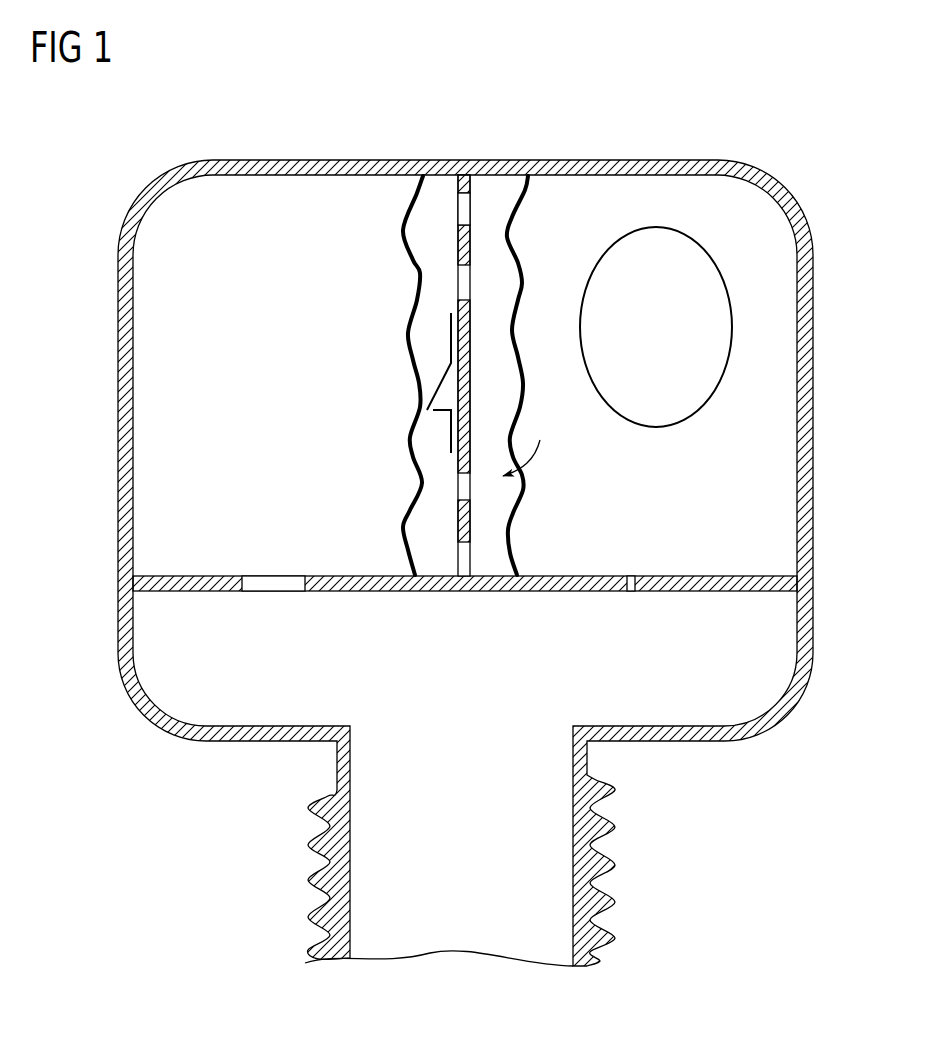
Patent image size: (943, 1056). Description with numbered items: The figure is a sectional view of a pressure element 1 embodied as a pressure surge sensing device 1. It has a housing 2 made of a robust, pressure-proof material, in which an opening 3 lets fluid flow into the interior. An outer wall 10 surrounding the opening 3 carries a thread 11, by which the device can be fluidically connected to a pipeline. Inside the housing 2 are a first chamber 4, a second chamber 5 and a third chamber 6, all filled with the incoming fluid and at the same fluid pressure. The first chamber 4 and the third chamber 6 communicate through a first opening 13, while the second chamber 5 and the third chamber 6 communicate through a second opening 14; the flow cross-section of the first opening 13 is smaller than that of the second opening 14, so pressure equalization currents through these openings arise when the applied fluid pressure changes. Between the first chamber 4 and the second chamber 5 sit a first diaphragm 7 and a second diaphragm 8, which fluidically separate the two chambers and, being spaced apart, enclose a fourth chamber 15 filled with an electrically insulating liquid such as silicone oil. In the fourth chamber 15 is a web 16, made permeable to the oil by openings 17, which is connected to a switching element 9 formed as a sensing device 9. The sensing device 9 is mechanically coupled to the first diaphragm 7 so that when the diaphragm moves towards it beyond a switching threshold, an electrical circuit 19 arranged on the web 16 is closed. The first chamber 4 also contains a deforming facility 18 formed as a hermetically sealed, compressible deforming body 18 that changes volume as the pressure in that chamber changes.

The pressure element 1 is at (701, 95).
The housing 2 is at (267, 172).
The opening 3 is at (479, 934).
The first chamber 4 is at (603, 205).
The second chamber 5 is at (316, 200).
The third chamber 6 is at (235, 707).
The first diaphragm 7 is at (410, 198).
The second diaphragm 8 is at (512, 196).
The switching element 9 is at (433, 387).
The outer wall 10 is at (648, 873).
The thread 11 is at (320, 883).
The first opening 13 is at (633, 598).
The second opening 14 is at (274, 596).
The fourth chamber 15 is at (440, 200).
The web 16 is at (470, 238).
The openings 17 is at (532, 442).
The deforming facility 18 is at (680, 428).
The electrical circuit 19 is at (448, 443).